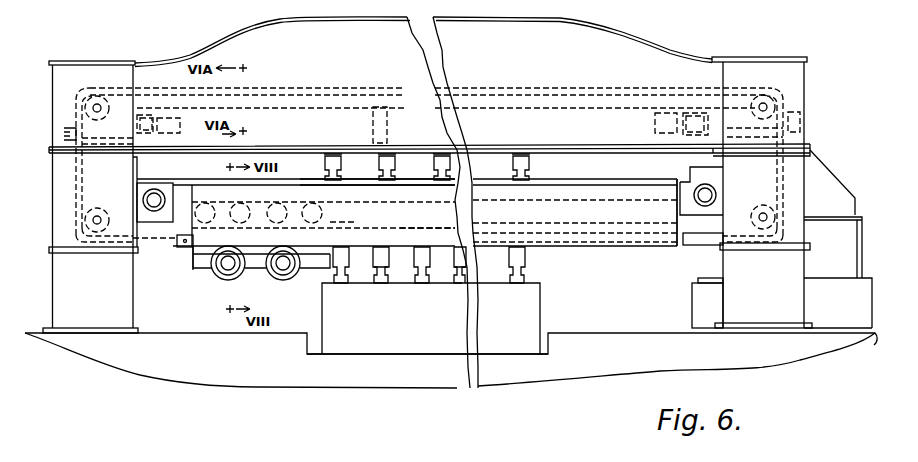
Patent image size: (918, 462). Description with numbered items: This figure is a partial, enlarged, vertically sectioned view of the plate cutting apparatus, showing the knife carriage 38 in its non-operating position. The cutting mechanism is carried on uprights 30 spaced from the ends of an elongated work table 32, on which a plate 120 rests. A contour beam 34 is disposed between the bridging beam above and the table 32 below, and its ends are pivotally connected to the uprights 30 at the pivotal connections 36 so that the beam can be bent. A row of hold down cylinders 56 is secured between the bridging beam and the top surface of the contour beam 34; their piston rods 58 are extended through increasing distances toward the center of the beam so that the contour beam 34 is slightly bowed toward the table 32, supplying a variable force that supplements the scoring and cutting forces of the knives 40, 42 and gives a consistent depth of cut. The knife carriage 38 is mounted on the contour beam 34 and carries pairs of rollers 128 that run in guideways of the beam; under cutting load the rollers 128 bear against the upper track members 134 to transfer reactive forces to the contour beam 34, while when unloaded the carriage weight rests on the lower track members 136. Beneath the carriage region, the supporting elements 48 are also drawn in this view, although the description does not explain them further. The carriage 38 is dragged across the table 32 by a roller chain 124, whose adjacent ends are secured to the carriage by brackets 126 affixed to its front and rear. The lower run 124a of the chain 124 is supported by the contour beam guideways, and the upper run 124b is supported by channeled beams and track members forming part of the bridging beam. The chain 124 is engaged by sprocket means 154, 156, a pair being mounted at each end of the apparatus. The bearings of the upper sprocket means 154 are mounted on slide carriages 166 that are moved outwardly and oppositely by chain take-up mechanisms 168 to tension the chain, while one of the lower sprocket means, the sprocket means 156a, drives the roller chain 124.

The uprights 30 is at (806, 172).
The work table 32 is at (432, 340).
The contour beam 34 is at (412, 182).
The pivotal connections 36 is at (688, 165).
The knife carriage 38 is at (193, 266).
The knife 40 is at (230, 277).
The knife 42 is at (279, 278).
The support feet 48 is at (460, 260).
The hold down cylinders 56 is at (386, 165).
The piston rods 58 is at (325, 178).
The plate 120 is at (537, 268).
The roller chain 124 is at (298, 87).
The lower run 124a is at (433, 230).
The upper run 124b is at (375, 107).
The brackets 126 is at (188, 246).
The rollers 128 is at (310, 225).
The upper track members 134 is at (342, 202).
The lower track members 136 is at (350, 223).
The upper sprocket means 154 is at (92, 97).
The lower sprocket means 156 is at (90, 197).
The driving sprocket means 156a is at (722, 244).
The slide carriages 166 is at (793, 117).
The chain take-up mechanisms 168 is at (145, 112).